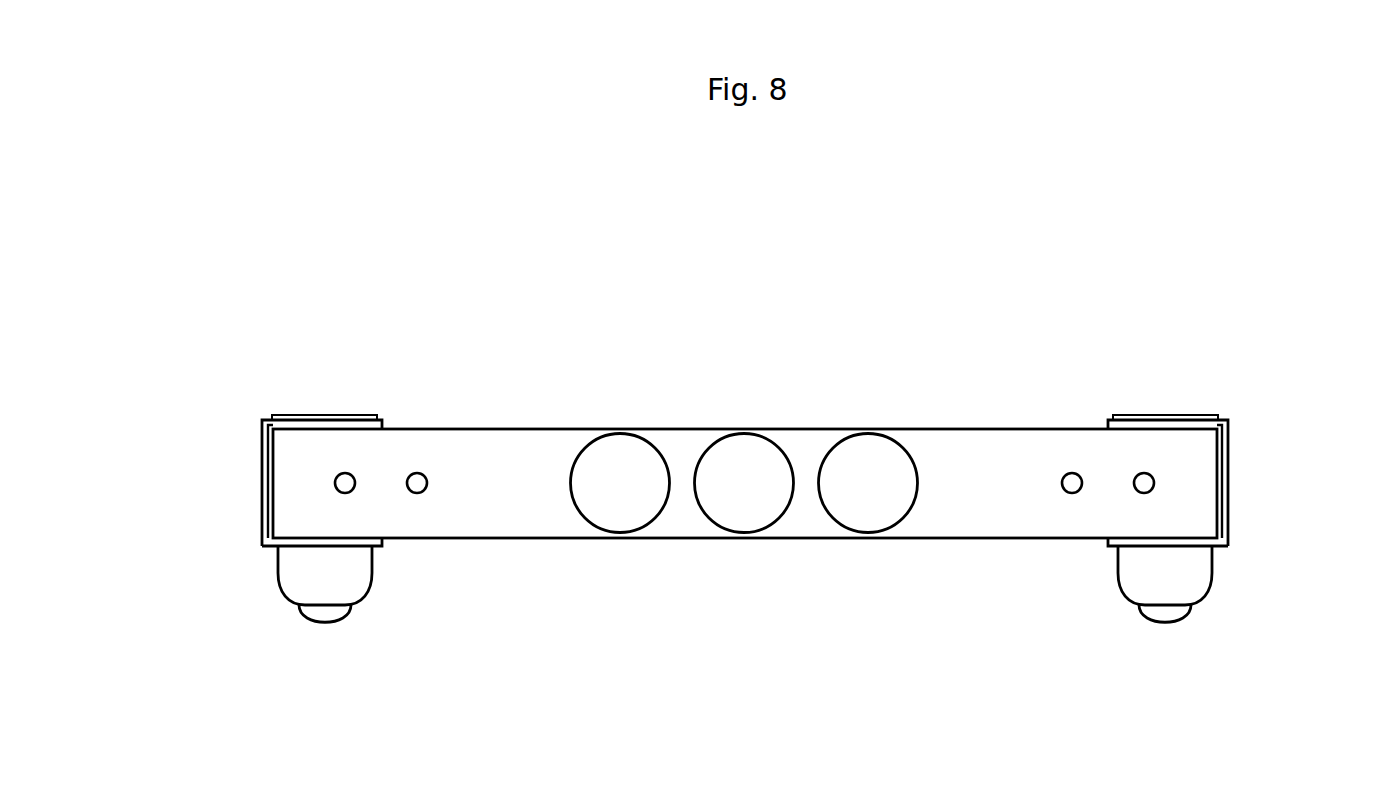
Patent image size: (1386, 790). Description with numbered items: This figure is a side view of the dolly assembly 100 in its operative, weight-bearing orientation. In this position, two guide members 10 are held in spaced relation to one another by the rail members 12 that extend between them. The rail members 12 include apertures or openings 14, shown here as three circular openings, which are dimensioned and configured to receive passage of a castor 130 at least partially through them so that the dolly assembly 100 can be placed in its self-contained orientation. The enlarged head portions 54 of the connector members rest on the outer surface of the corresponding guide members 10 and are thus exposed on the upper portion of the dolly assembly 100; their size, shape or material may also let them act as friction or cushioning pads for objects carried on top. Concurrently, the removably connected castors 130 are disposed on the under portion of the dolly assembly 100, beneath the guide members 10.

The dolly assembly 100 is at (244, 196).
The guide member 10 is at (257, 481).
The rail member 12 is at (975, 539).
The opening 14 is at (705, 515).
The enlarged head portion 54 is at (352, 413).
The castor 130 is at (372, 585).